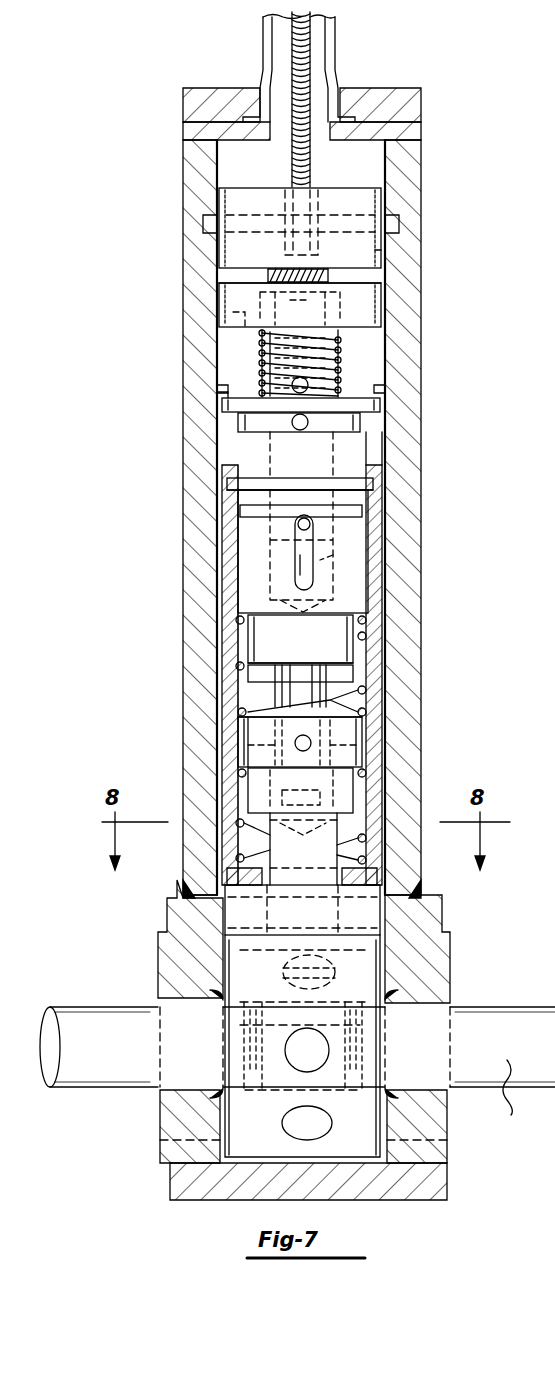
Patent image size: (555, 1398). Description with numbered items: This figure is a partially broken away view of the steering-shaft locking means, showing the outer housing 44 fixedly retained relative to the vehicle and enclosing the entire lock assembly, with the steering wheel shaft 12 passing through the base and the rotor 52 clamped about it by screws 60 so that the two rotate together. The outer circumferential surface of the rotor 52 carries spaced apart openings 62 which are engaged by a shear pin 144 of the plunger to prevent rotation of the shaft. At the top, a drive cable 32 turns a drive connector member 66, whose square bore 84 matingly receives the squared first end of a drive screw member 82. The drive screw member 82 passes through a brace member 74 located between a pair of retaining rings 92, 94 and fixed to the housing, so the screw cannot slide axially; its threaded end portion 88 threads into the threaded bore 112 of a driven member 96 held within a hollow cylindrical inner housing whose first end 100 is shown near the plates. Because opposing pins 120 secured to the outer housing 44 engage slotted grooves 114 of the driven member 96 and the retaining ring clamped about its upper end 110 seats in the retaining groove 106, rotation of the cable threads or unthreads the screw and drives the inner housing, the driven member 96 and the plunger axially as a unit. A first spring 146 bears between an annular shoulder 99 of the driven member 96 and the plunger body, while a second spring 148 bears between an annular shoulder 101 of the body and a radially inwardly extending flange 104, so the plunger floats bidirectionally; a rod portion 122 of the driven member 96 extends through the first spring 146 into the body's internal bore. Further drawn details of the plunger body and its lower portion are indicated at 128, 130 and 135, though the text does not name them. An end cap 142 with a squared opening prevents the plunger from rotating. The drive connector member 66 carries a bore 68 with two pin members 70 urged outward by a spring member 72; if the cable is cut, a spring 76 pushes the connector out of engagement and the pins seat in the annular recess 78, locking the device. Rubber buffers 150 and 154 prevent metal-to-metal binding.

The steering wheel shaft 12 is at (513, 1100).
The drive cable 32 is at (312, 48).
The outer housing 44 is at (176, 198).
The rotor 52 is at (235, 968).
The screws 60 is at (447, 1140).
The openings 62 is at (335, 973).
The drive connector member 66 is at (383, 250).
The bore 68 is at (383, 264).
The pin members 70 is at (225, 290).
The spring member 72 is at (268, 276).
The brace member 74 is at (380, 400).
The spring 76 is at (345, 352).
The annular recess 78 is at (398, 212).
The drive screw member 82 is at (296, 449).
The bore 84 is at (233, 320).
The threaded end portion 88 is at (232, 480).
The retaining ring 92 is at (222, 395).
The retaining ring 94 is at (240, 428).
The driven member 96 is at (355, 555).
The annular shoulder 99 is at (362, 628).
The first end 100 is at (372, 482).
The annular shoulder 101 is at (362, 775).
The radially inwardly extending flange 104 is at (372, 878).
The retaining groove 106 is at (372, 490).
The upper end 110 is at (362, 510).
The threaded bore 112 is at (338, 563).
The slotted grooves 114 is at (262, 672).
The pins 120 is at (250, 620).
The rod portion 122 is at (200, 765).
The block 128 is at (362, 720).
The block 130 is at (353, 800).
The block face 135 is at (353, 660).
The end cap 142 is at (380, 905).
The shear pin 144 is at (380, 940).
The first spring 146 is at (240, 690).
The second spring 148 is at (240, 835).
The first buffer 150 is at (372, 440).
The third buffer 154 is at (300, 560).